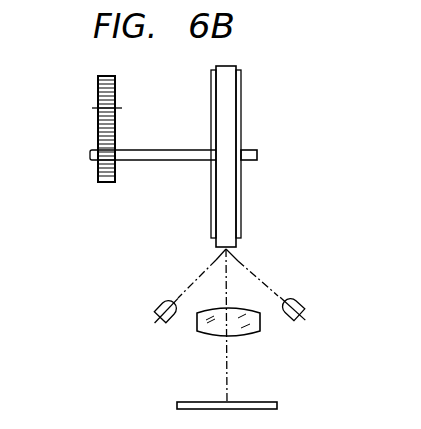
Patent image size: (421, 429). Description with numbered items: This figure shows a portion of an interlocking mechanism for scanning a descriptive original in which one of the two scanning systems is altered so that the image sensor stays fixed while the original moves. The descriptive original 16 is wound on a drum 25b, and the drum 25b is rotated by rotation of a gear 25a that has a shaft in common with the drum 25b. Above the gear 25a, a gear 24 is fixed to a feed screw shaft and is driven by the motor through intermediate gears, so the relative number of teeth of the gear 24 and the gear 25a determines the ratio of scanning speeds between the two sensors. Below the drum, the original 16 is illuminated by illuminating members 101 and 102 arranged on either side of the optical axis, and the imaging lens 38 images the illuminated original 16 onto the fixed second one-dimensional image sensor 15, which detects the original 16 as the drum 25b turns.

The descriptive original 16 is at (238, 127).
The gear 24 is at (100, 94).
The gear 25a is at (98, 147).
The drum 25b is at (241, 75).
The illuminating member 101 is at (157, 308).
The illuminating member 102 is at (303, 303).
The imaging lens 38 is at (255, 325).
The second one-dimensional image sensor 15 is at (253, 402).